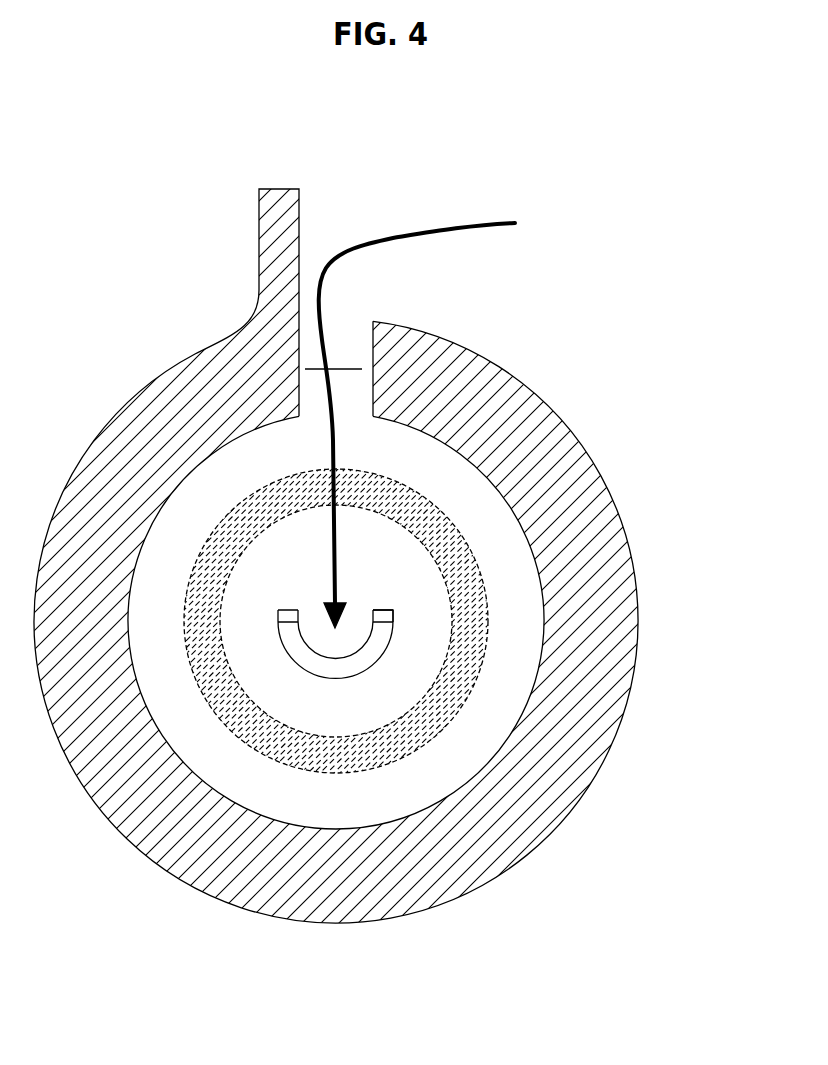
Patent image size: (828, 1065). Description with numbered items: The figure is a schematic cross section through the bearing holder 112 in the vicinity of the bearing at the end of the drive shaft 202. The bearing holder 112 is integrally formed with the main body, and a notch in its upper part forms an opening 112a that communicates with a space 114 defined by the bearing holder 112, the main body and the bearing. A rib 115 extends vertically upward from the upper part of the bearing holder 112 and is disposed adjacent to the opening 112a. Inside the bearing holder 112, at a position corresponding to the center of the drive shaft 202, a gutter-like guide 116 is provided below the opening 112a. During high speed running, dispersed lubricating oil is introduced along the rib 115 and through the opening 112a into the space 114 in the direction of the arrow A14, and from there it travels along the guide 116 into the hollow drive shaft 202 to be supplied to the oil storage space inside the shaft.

The bearing holder 112 is at (613, 523).
The opening 112a is at (372, 352).
The space 114 is at (470, 510).
The rib 115 is at (285, 250).
The guide 116 is at (337, 658).
The drive shaft 202 is at (393, 612).
The arrow A14 is at (404, 232).